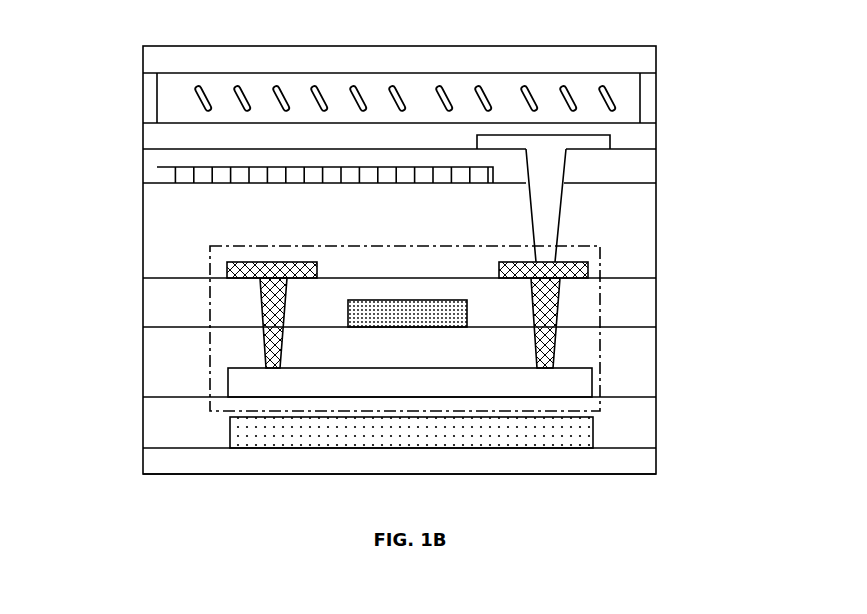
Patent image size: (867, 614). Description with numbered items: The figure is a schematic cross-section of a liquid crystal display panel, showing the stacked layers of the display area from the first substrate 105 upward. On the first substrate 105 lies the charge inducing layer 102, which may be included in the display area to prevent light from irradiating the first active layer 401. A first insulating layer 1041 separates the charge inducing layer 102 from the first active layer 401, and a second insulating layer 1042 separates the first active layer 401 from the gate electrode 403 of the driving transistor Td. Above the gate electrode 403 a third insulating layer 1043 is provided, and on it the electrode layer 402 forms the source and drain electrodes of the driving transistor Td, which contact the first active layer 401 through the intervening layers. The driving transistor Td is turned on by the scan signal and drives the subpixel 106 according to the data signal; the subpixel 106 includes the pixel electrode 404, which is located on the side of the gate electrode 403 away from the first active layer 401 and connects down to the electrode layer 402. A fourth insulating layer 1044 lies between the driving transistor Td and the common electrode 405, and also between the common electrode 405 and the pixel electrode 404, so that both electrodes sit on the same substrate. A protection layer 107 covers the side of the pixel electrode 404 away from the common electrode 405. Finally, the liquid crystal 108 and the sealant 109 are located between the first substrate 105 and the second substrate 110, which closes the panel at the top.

The second substrate 110 is at (638, 61).
The sealant 109 is at (155, 99).
The liquid crystal 108 is at (606, 107).
The protection layer 107 is at (638, 136).
The fourth insulating layer 1044 is at (638, 167).
The common electrode 405 is at (160, 178).
The pixel electrode 404 is at (545, 221).
The subpixel 106 is at (634, 295).
The gate electrode 403 is at (372, 315).
The electrode layer 402 is at (277, 290).
The third insulating layer 1043 is at (198, 302).
The first active layer 401 is at (243, 377).
The second insulating layer 1042 is at (642, 357).
The charge inducing layer 102 is at (247, 428).
The first insulating layer 1041 is at (642, 419).
The first substrate 105 is at (167, 454).
The driving transistor Td is at (600, 309).